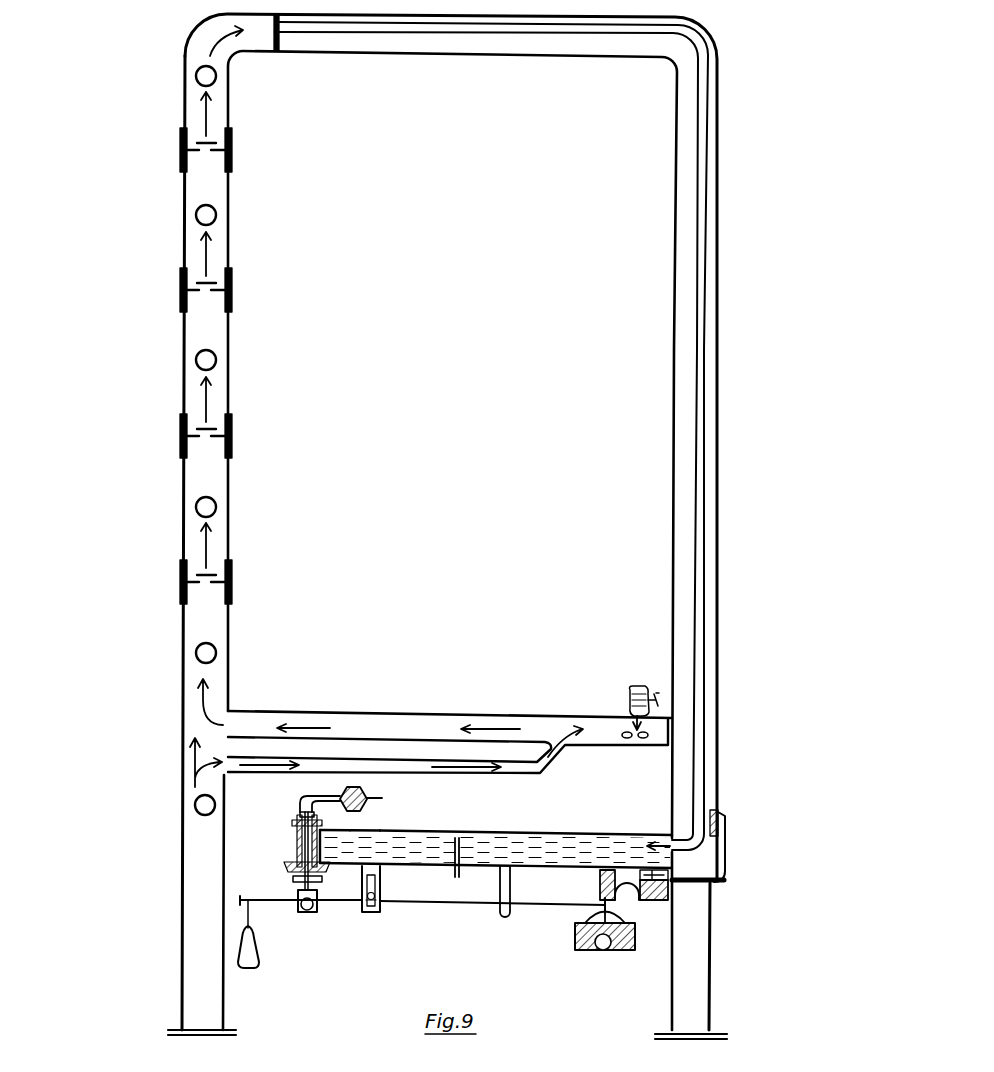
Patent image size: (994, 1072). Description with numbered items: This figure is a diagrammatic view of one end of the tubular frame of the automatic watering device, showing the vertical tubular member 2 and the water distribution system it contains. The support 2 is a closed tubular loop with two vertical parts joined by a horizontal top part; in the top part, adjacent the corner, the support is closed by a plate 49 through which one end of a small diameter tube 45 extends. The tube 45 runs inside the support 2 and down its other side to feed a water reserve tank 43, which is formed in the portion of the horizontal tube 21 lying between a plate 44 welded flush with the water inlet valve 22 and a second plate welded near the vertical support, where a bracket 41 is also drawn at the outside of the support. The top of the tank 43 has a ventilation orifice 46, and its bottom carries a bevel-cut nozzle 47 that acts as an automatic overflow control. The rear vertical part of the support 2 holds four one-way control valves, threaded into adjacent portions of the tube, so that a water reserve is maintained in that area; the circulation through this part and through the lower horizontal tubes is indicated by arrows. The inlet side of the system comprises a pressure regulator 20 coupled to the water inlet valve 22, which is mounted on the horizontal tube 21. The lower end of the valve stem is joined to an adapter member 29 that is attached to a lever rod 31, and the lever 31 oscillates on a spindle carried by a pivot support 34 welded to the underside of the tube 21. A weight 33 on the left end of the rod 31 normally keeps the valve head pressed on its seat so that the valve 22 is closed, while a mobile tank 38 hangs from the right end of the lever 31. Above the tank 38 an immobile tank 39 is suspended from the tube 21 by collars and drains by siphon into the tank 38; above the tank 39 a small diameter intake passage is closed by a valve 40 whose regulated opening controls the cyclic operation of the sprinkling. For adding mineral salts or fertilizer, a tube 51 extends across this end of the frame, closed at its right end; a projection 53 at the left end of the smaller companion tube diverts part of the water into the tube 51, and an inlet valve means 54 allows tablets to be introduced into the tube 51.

The vertical tubular member 2 is at (497, 58).
The pressure regulator 20 is at (336, 792).
The horizontal tube 21 is at (494, 831).
The water inlet valve 22 is at (284, 852).
The adapter member 29 is at (296, 893).
The lever rod 31 is at (420, 907).
The weight 33 is at (232, 961).
The pivot support 34 is at (370, 914).
The mobile tank 38 is at (603, 955).
The fixed tank 39 is at (658, 906).
The valve 40 is at (648, 906).
The bracket 41 is at (723, 810).
The water reserve tank 43 is at (554, 833).
The plate 44 is at (350, 831).
The small diameter tube 45 is at (422, 34).
The ventilation orifice 46 is at (410, 832).
The nozzle 47 is at (462, 882).
The plate 49 is at (281, 55).
The tube 51 is at (448, 711).
The projection 53 is at (230, 754).
The inlet valve means 54 is at (637, 686).